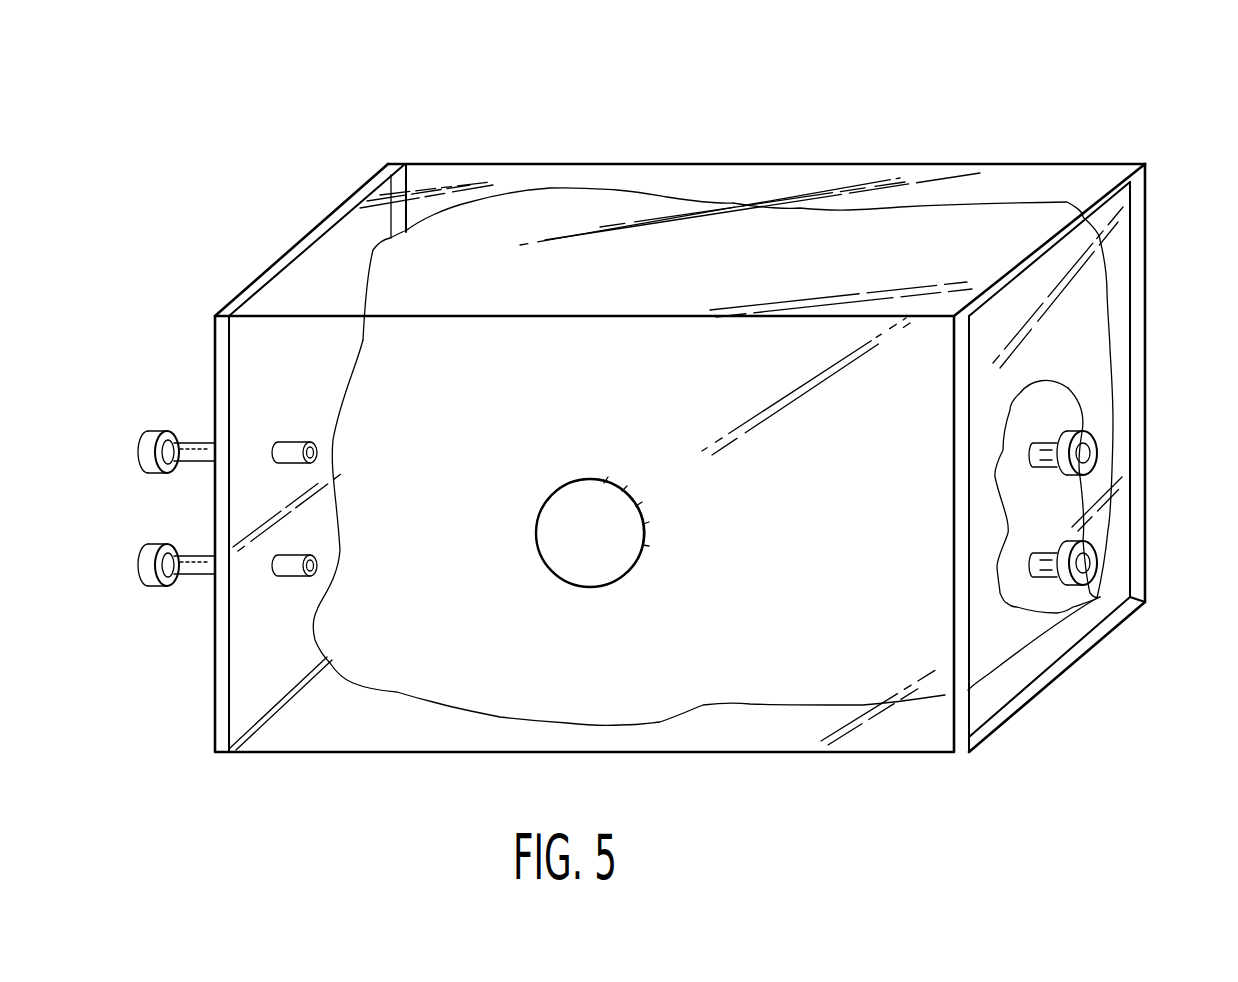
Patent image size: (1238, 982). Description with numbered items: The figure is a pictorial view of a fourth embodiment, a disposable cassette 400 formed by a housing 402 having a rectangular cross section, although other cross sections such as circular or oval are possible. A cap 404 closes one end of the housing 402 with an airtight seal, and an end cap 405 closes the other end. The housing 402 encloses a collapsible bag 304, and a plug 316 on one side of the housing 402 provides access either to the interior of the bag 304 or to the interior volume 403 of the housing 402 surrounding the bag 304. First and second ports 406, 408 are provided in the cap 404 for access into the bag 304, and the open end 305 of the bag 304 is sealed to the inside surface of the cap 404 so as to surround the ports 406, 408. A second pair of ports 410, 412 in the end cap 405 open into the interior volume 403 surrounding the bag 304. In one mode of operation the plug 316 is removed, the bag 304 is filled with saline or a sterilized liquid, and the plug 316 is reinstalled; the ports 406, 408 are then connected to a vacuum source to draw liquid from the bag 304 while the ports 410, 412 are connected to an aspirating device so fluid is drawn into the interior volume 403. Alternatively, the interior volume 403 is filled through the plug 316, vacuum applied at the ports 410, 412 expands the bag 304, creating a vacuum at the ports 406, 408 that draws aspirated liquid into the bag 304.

The disposable cassette 400 is at (903, 97).
The housing 402 is at (947, 165).
The cap 404 is at (1122, 228).
The interior volume 403 is at (317, 720).
The end cap 405 is at (213, 700).
The collapsible bag 304 is at (657, 198).
The open end 305 is at (1068, 388).
The plug 316 is at (610, 478).
The first port 406 is at (1097, 453).
The second port 408 is at (1097, 555).
The port 410 is at (138, 450).
The port 412 is at (138, 571).